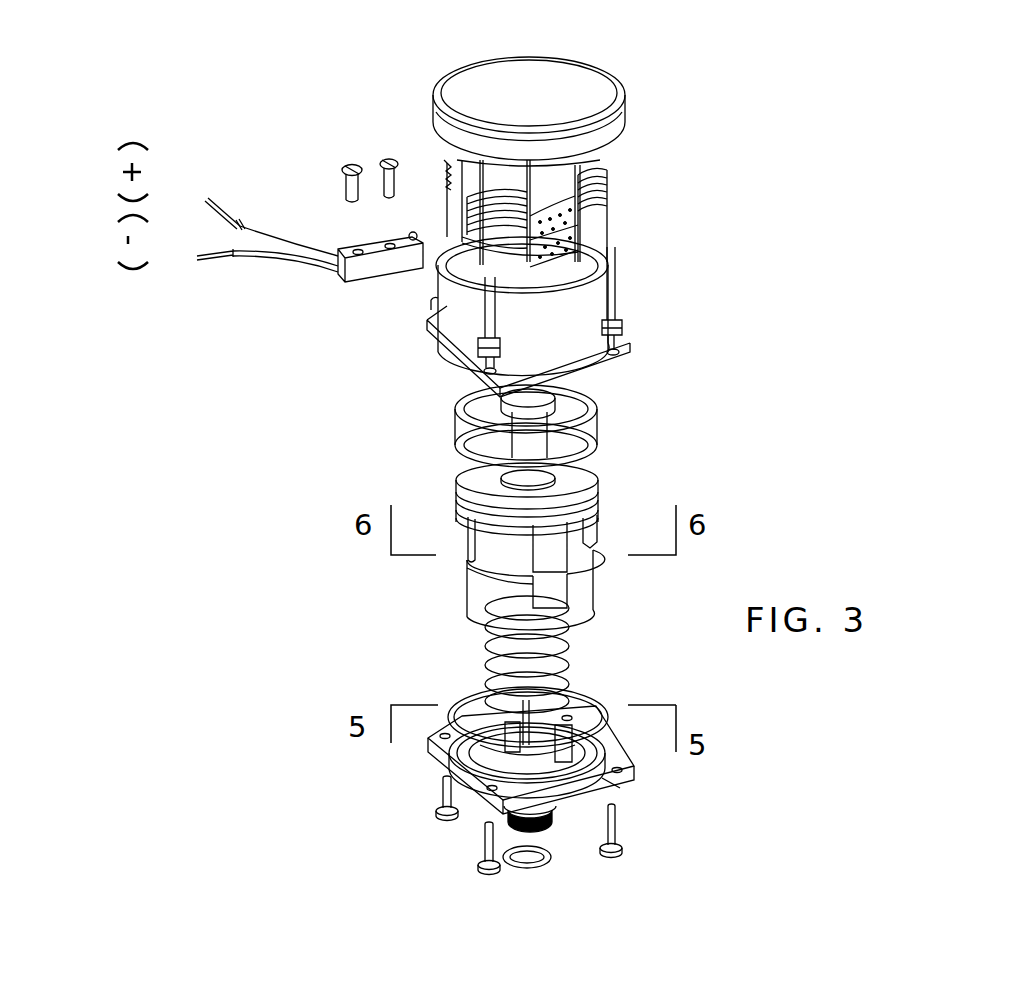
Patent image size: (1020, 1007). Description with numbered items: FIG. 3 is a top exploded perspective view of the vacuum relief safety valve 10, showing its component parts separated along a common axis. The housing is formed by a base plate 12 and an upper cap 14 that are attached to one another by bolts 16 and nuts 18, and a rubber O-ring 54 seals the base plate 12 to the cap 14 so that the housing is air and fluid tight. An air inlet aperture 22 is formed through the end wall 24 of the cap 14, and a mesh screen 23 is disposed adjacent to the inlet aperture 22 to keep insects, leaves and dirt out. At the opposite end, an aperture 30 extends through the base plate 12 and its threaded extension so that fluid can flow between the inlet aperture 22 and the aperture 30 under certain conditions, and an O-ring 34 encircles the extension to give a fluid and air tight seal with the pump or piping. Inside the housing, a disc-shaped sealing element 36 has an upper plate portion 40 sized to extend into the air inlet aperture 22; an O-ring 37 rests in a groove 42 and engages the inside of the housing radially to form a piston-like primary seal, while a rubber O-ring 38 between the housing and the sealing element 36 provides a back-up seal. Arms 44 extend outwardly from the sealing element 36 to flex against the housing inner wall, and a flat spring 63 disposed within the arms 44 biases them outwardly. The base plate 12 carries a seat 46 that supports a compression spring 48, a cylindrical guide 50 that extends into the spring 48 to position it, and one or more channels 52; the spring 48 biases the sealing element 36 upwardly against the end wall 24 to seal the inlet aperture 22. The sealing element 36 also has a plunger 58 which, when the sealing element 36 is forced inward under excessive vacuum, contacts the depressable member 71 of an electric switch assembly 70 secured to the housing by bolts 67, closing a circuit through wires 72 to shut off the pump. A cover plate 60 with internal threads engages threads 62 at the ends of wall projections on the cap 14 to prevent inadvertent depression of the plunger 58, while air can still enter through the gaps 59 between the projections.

The vacuum relief safety valve 10 is at (209, 509).
The base plate 12 is at (646, 772).
The upper cap 14 is at (623, 297).
The bolts 16 is at (437, 813).
The nuts 18 is at (432, 330).
The air inlet aperture 22 is at (610, 260).
The mesh screen 23 is at (604, 232).
The end wall 24 is at (612, 270).
The aperture 30 is at (535, 765).
The O-ring 34 is at (480, 868).
The sealing element 36 is at (614, 473).
The O-ring 37 is at (466, 447).
The rubber O-ring 38 is at (598, 418).
The upper plate portion 40 is at (458, 480).
The groove 42 is at (462, 506).
The arms 44 is at (464, 544).
The seat 46 is at (620, 788).
The spring 48 is at (486, 645).
The cylindrical guide 50 is at (490, 768).
The channels 52 is at (483, 760).
The rubber O-ring 54 is at (450, 700).
The plunger 58 is at (552, 407).
The gaps 59 is at (457, 215).
The cover plate 60 is at (436, 102).
The threads 62 is at (604, 190).
The flat spring 63 is at (468, 588).
The bolts 67 is at (338, 233).
The electric switch assembly 70 is at (245, 235).
The depressable member 71 is at (402, 227).
The wires 72 is at (214, 234).